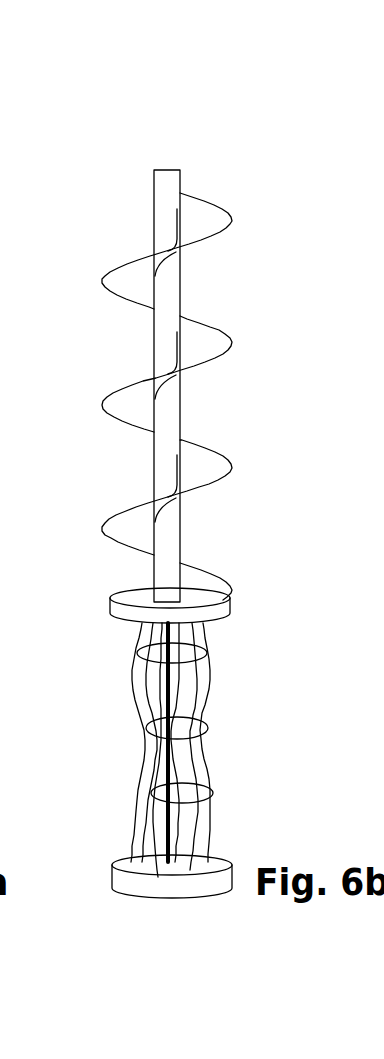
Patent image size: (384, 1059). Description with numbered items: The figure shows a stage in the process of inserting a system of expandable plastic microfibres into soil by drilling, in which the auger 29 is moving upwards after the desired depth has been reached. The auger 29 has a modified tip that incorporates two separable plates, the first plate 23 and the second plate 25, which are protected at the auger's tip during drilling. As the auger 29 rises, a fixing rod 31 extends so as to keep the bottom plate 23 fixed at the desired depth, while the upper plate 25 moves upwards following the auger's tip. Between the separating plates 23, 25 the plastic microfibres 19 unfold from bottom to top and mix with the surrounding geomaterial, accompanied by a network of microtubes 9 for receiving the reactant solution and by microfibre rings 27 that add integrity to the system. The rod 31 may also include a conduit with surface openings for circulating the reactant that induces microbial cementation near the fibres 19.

The auger 29 is at (232, 350).
The first plate 23 is at (230, 610).
The fixing rod 31 is at (206, 655).
The microfibre rings 27 is at (208, 722).
The plastic microfibres 19 is at (205, 757).
The microtubes 9 is at (133, 683).
The second plate 25 is at (128, 862).